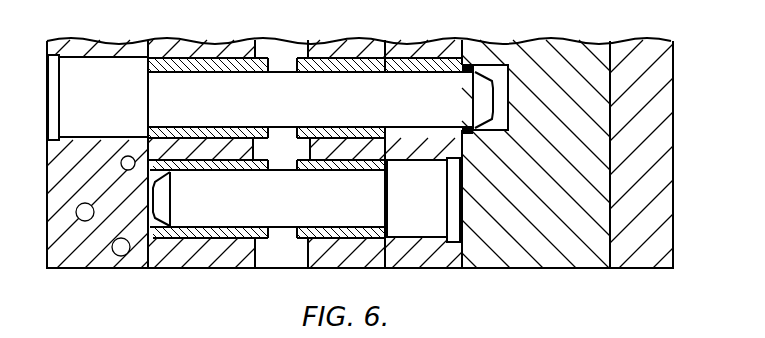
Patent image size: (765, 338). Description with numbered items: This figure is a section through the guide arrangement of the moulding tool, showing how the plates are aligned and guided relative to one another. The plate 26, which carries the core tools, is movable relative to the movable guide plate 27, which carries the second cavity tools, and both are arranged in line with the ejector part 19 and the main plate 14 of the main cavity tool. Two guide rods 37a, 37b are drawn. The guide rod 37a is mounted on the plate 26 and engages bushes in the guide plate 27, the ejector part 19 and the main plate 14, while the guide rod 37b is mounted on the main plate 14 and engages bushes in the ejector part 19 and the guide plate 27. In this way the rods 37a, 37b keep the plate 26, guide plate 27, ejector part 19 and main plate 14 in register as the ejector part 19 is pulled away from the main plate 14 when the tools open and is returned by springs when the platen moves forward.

The plate 26 is at (80, 248).
The movable guide plate 27 is at (175, 253).
The ejector part 19 is at (338, 248).
The main plate 14 is at (420, 251).
The guide rod 37a is at (192, 109).
The guide rod 37b is at (295, 207).